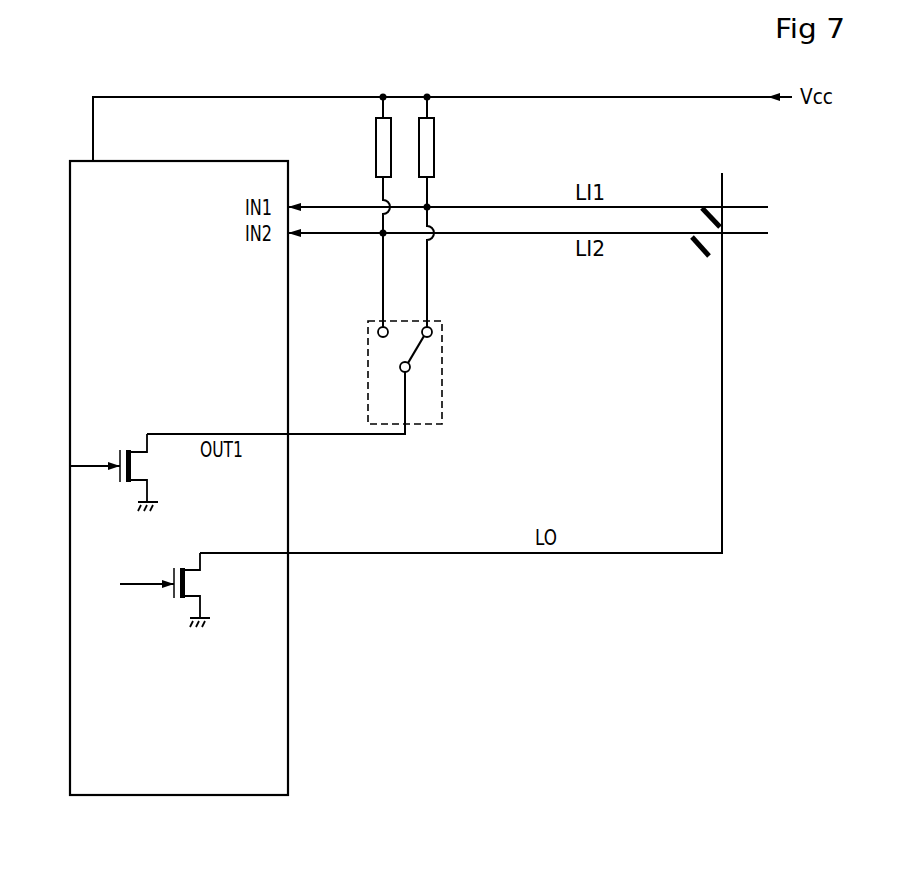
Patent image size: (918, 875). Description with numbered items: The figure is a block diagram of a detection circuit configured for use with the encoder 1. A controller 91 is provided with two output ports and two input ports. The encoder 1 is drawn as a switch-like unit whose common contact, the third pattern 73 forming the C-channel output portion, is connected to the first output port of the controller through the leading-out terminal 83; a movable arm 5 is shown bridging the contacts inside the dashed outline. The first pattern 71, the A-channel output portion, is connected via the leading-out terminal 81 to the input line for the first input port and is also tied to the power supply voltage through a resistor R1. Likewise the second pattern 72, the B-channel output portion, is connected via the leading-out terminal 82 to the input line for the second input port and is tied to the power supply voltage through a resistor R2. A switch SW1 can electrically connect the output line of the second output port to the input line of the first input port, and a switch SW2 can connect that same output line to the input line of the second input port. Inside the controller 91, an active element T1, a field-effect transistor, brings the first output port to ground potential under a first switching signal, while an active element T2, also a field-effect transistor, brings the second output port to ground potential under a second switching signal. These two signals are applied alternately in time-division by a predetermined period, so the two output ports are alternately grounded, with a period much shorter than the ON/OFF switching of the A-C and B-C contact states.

The encoder 1 is at (448, 376).
The movable contact arm 5 is at (400, 347).
The first pattern 71 is at (432, 332).
The second pattern 72 is at (378, 326).
The third pattern 73 is at (410, 370).
The leading-out terminal 81 is at (429, 262).
The leading-out terminal 82 is at (381, 265).
The leading-out terminal 83 is at (323, 432).
The controller 91 is at (175, 782).
The resistor R1 is at (430, 148).
The resistor R2 is at (380, 147).
The active element T1 is at (120, 443).
The active element T2 is at (184, 561).
The switch SW1 is at (700, 222).
The switch SW2 is at (700, 250).